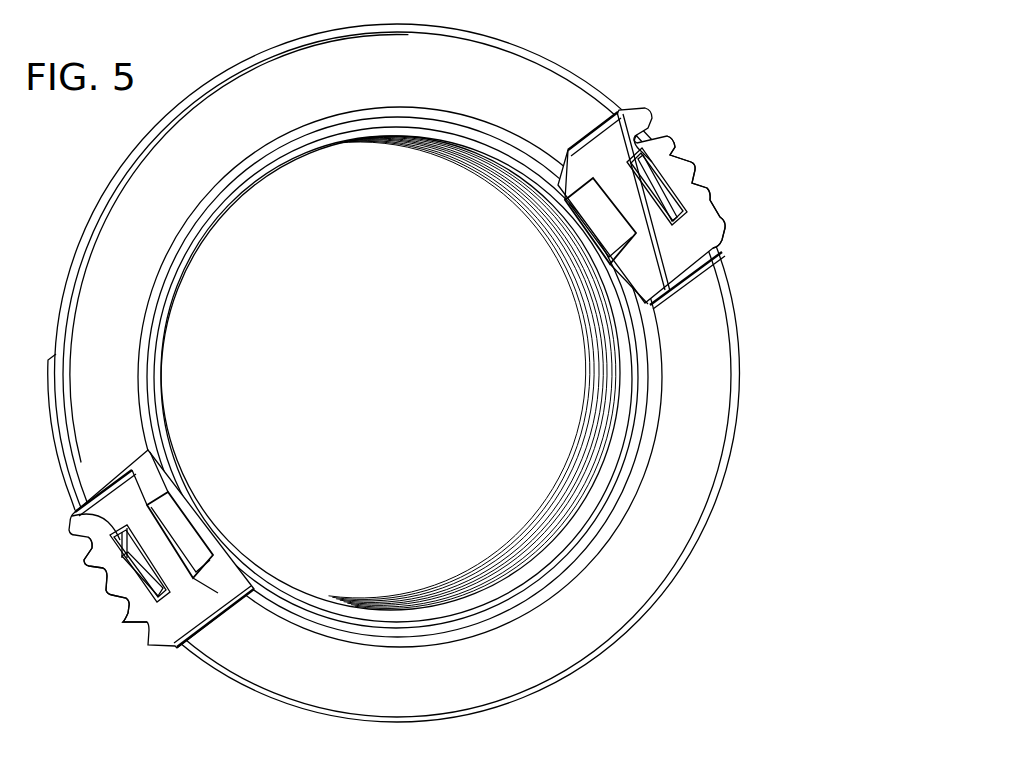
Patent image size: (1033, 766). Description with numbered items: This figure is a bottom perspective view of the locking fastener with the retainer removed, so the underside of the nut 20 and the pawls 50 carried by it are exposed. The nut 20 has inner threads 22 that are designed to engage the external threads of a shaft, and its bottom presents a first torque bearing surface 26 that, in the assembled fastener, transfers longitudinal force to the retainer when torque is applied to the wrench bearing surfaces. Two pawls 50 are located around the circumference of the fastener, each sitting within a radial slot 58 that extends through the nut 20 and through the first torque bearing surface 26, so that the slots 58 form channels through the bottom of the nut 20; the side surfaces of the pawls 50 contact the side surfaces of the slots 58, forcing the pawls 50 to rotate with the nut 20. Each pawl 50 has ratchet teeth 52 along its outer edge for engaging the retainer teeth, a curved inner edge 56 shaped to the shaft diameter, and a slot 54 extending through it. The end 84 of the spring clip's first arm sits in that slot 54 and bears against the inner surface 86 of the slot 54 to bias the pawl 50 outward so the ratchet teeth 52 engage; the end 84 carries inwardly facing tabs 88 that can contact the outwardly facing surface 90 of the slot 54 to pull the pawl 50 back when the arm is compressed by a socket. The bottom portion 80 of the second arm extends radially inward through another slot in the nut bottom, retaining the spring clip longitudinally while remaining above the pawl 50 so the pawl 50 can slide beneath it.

The nut 20 is at (245, 60).
The inner threads 22 is at (577, 477).
The first torque bearing surface 26 is at (243, 145).
The pawl 50 is at (634, 120).
The ratchet teeth 52 is at (712, 175).
The slot 54 is at (646, 131).
The inner edge 56 is at (571, 188).
The radial slots 58 is at (640, 282).
The bottom portion of the second arm 80 is at (598, 220).
The end of the first arm 84 is at (657, 190).
The inner surface 86 is at (697, 203).
The tabs 88 is at (650, 152).
The outwardly facing surface 90 is at (605, 245).